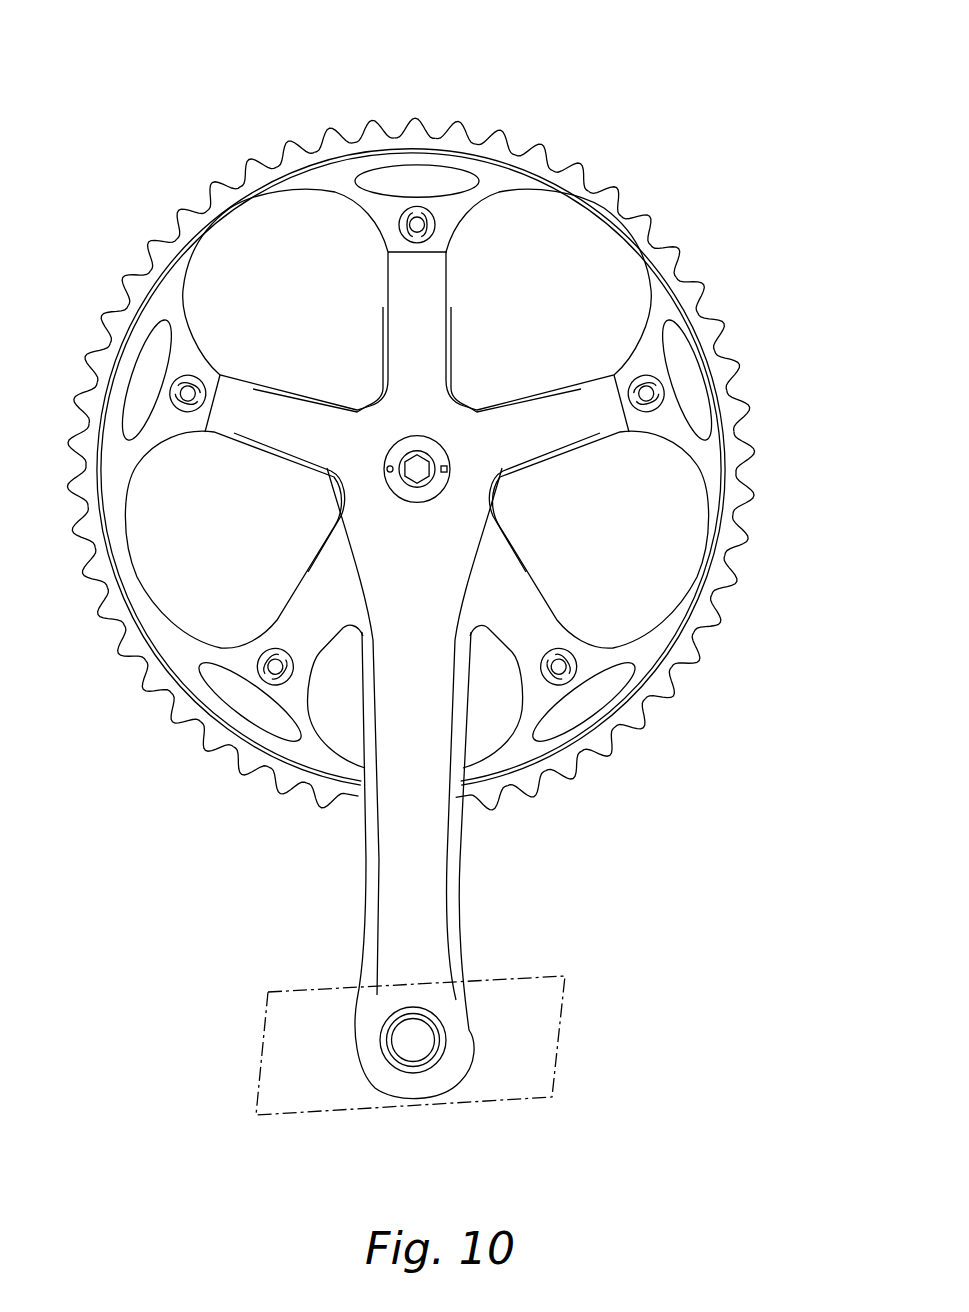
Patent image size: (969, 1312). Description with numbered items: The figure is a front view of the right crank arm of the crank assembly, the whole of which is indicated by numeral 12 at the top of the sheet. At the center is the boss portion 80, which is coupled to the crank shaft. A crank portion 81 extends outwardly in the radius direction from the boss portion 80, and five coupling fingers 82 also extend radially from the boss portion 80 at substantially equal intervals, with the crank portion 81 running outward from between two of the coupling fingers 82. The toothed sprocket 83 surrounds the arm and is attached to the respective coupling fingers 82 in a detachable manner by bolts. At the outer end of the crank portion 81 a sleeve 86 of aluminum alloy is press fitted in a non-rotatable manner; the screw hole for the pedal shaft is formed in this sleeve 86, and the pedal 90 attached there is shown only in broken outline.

The crank assembly 12 is at (438, 43).
The boss portion 80 is at (460, 420).
The crank portion 81 is at (398, 852).
The coupling fingers 82 is at (269, 405).
The sprocket 83 is at (530, 182).
The sleeve 86 is at (424, 1006).
The pedal 90 is at (500, 975).